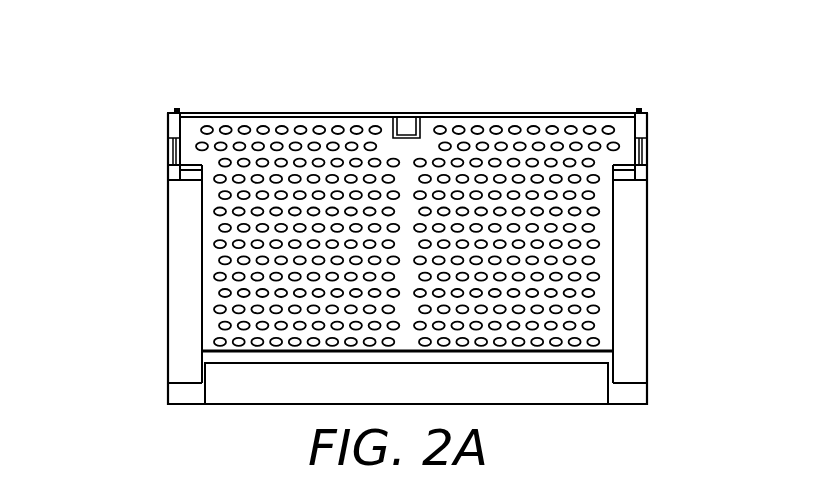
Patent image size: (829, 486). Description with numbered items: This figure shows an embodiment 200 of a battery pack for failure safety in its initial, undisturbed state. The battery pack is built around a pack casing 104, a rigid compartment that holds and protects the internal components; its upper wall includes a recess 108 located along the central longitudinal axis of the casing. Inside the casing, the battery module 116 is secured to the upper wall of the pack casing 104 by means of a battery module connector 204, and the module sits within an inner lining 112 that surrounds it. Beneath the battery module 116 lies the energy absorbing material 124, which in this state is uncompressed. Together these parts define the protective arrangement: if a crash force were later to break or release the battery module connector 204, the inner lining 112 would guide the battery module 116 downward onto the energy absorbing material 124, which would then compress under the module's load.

The embodiment of a battery pack for failure safety 200 is at (107, 106).
The recess 108 is at (515, 108).
The inner lining 112 is at (652, 282).
The battery module connector 204 is at (652, 147).
The battery module 116 is at (328, 138).
The energy absorbing material 124 is at (199, 392).
The pack casing 104 is at (653, 393).